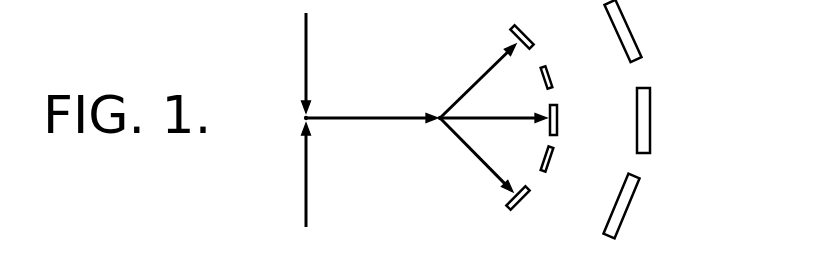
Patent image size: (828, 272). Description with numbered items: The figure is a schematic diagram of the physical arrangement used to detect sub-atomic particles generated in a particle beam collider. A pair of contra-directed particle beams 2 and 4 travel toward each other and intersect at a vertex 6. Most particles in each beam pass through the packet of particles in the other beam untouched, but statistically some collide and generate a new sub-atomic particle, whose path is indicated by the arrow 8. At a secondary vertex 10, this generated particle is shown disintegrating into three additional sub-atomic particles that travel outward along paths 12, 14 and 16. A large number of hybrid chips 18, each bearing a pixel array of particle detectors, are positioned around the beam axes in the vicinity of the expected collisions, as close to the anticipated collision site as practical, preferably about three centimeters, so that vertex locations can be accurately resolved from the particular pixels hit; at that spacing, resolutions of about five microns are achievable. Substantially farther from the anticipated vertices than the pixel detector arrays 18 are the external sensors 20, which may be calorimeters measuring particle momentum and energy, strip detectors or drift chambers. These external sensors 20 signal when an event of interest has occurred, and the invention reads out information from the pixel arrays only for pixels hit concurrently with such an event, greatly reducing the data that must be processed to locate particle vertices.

The particle beam 2 is at (305, 62).
The particle beam 4 is at (305, 193).
The vertex 6 is at (292, 124).
The arrow 8 is at (352, 116).
The secondary vertex 10 is at (436, 105).
The path 12 is at (482, 77).
The path 14 is at (488, 117).
The path 16 is at (460, 146).
The hybrid chips 18 is at (528, 202).
The external sensors 20 is at (631, 28).